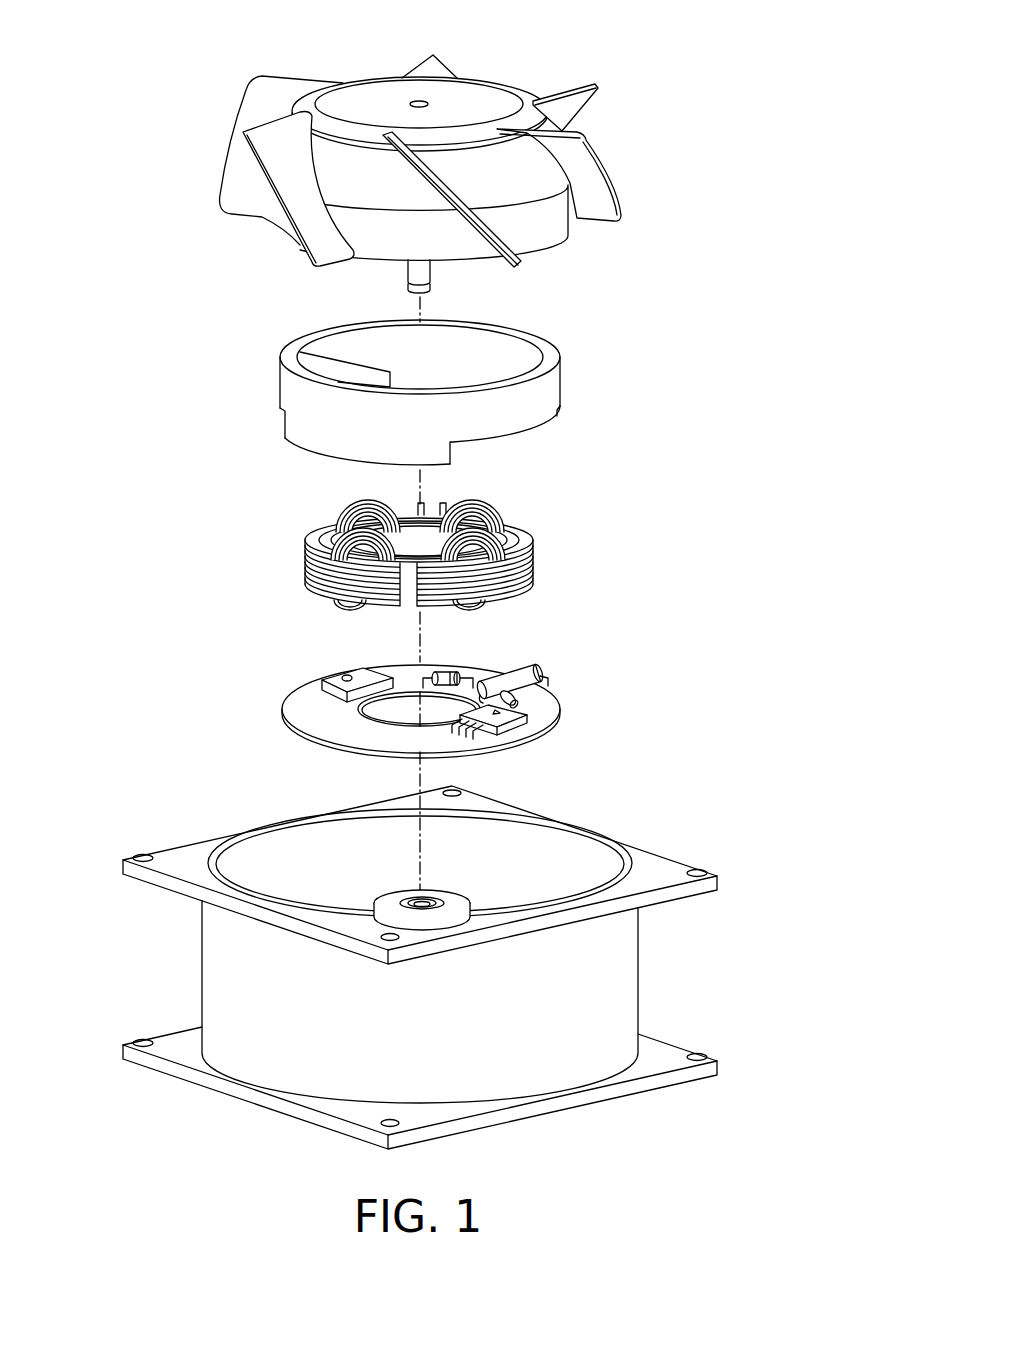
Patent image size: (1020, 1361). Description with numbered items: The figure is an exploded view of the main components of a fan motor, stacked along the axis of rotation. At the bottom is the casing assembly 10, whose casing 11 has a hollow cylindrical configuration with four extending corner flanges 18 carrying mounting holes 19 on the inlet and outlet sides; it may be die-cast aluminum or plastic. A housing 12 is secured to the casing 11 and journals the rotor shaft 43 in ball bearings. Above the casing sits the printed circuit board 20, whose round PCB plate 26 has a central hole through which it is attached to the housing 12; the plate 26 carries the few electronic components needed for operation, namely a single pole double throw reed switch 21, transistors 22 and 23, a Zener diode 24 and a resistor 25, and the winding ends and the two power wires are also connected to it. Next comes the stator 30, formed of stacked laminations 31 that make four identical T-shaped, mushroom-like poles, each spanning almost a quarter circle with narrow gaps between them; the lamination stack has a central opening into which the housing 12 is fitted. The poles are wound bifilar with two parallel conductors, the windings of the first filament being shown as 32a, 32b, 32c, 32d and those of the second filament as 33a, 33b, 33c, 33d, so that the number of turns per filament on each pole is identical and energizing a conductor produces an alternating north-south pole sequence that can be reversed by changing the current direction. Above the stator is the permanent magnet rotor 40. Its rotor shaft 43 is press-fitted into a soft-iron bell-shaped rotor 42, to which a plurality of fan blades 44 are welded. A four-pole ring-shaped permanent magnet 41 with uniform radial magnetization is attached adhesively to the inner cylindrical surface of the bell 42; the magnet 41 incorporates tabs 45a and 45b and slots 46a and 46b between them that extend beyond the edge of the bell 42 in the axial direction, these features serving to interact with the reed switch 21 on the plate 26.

The casing assembly 10 is at (434, 956).
The casing 11 is at (642, 993).
The housing 12 is at (378, 898).
The corner flange 18 is at (500, 798).
The mounting hole 19 is at (462, 790).
The printed circuit board 20 is at (507, 693).
The reed switch 21 is at (538, 672).
The transistor 22 is at (322, 686).
The transistor 23 is at (530, 717).
The Zener diode 24 is at (447, 673).
The resistor 25 is at (528, 697).
The PCB plate 26 is at (303, 731).
The stator 30 is at (480, 542).
The stacked laminations 31 is at (535, 527).
The winding 32a is at (560, 503).
The winding 32b is at (273, 507).
The winding 32c is at (271, 564).
The winding 32d is at (562, 569).
The winding 33a is at (493, 510).
The winding 33b is at (347, 517).
The winding 33c is at (360, 547).
The winding 33d is at (503, 543).
The permanent magnet rotor 40 is at (485, 253).
The permanent magnet 41 is at (449, 396).
The bell-shaped rotor 42 is at (487, 80).
The rotor shaft 43 is at (405, 273).
The fan blade 44 is at (415, 62).
The tab 45a is at (295, 443).
The tab 45b is at (560, 420).
The slot 46a is at (340, 382).
The slot 46b is at (462, 440).